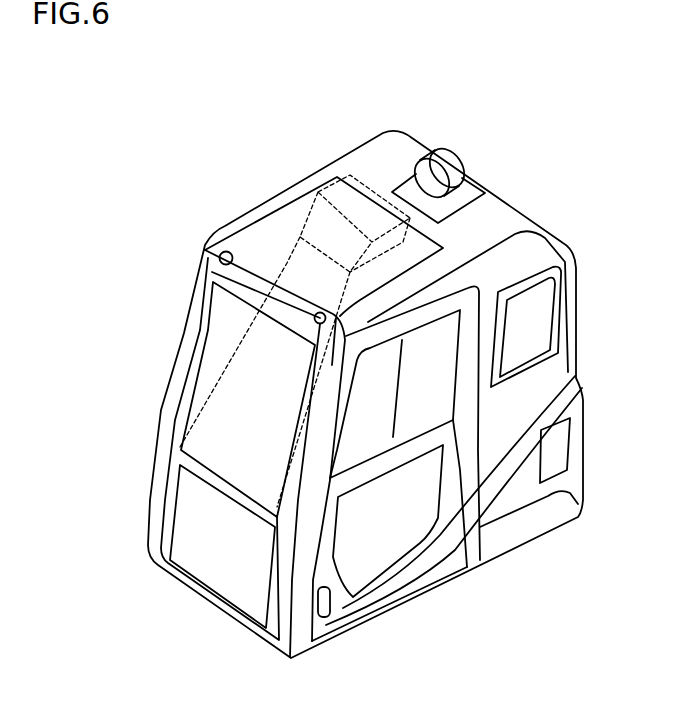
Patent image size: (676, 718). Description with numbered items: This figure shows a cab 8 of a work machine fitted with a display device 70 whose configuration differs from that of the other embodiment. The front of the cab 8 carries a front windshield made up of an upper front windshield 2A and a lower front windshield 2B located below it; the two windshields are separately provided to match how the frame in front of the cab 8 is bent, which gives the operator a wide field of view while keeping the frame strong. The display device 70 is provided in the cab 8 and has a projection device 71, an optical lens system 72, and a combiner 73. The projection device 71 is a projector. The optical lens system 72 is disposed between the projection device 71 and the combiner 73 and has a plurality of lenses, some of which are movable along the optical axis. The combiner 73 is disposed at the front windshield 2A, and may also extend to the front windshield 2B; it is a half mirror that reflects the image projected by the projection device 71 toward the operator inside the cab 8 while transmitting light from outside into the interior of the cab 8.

The cab 8 is at (112, 72).
The display device 70 is at (389, 84).
The projection device 71 is at (372, 192).
The optical lens system 72 is at (305, 187).
The combiner 73 is at (213, 310).
The front windshield 2A is at (212, 362).
The front windshield 2B is at (193, 518).